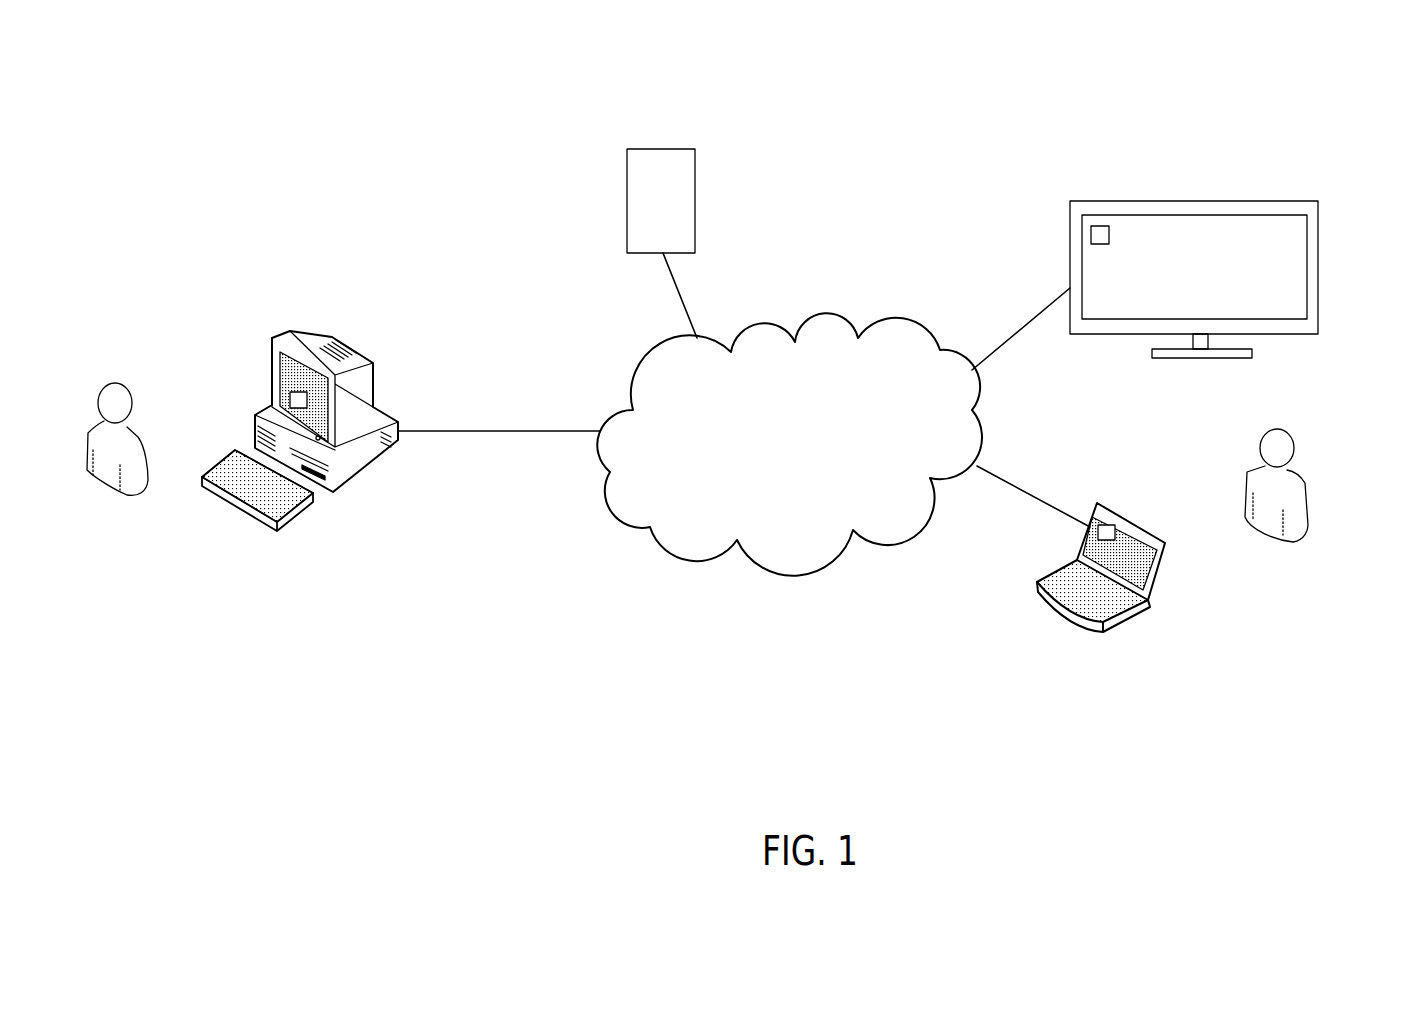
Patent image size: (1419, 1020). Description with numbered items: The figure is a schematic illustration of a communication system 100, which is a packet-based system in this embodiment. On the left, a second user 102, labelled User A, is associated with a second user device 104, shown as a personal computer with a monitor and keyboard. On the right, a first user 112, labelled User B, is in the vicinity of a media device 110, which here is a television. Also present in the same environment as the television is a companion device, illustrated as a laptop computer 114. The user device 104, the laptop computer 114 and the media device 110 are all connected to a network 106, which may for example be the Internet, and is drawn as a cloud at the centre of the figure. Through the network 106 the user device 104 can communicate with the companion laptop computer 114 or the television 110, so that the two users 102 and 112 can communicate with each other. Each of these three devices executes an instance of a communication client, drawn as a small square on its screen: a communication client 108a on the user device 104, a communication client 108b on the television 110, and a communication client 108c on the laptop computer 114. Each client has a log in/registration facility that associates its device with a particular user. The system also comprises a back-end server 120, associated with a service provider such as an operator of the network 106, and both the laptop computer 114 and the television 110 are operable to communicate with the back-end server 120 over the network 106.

The communication system 100 is at (270, 156).
The second user 102 is at (114, 380).
The second user device 104 is at (350, 479).
The network 106 is at (897, 320).
The communication client 108a is at (290, 399).
The communication client 108b is at (1091, 238).
The communication client 108c is at (1098, 534).
The media device 110 is at (1320, 245).
The first user 112 is at (1310, 483).
The laptop computer 114 is at (1128, 618).
The back-end server 120 is at (630, 222).